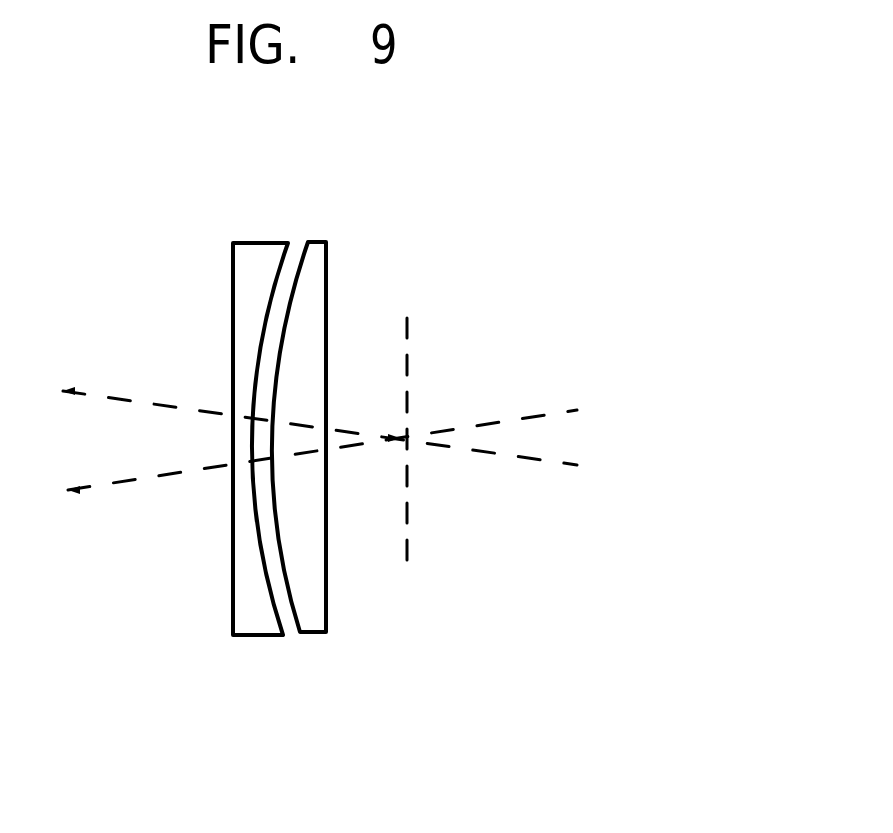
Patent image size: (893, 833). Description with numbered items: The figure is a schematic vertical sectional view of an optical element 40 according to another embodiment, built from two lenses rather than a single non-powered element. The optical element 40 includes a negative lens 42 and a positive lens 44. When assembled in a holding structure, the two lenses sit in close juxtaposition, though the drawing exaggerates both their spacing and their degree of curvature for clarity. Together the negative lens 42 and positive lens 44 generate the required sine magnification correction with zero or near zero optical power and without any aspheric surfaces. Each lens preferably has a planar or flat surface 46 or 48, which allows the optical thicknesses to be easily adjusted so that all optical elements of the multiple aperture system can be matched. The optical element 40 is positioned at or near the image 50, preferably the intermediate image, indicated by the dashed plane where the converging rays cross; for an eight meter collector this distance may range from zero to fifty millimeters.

The optical element 40 is at (570, 300).
The negative lens 42 is at (233, 313).
The positive lens 44 is at (333, 601).
The planar surface 46 is at (232, 567).
The planar surface 48 is at (328, 313).
The image 50 is at (407, 522).